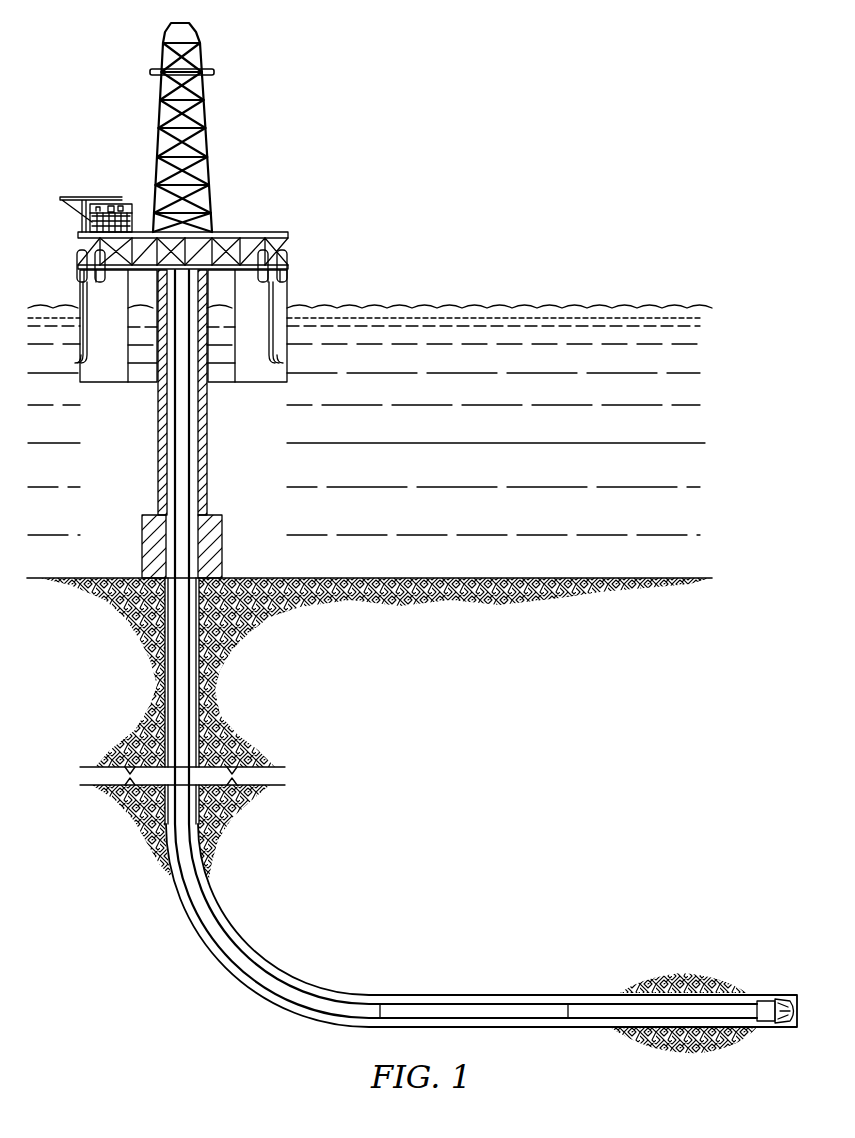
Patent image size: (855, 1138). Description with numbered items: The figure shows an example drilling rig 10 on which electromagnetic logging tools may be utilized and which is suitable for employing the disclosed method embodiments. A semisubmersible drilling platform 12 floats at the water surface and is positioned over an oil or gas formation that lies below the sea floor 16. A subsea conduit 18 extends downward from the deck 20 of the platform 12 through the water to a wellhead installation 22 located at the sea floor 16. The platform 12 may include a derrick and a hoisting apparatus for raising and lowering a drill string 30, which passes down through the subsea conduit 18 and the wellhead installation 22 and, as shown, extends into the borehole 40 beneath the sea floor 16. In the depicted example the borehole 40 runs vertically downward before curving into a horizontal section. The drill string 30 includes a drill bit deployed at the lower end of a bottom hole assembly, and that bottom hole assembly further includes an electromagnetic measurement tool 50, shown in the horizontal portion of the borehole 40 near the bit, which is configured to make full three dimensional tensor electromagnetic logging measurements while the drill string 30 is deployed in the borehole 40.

The drilling rig 10 is at (291, 124).
The semisubmersible drilling platform 12 is at (272, 232).
The sea floor 16 is at (410, 579).
The subsea conduit 18 is at (207, 462).
The deck 20 is at (292, 263).
The wellhead installation 22 is at (215, 515).
The drill string 30 is at (182, 395).
The borehole 40 is at (166, 668).
The electromagnetic measurement tool 50 is at (433, 993).